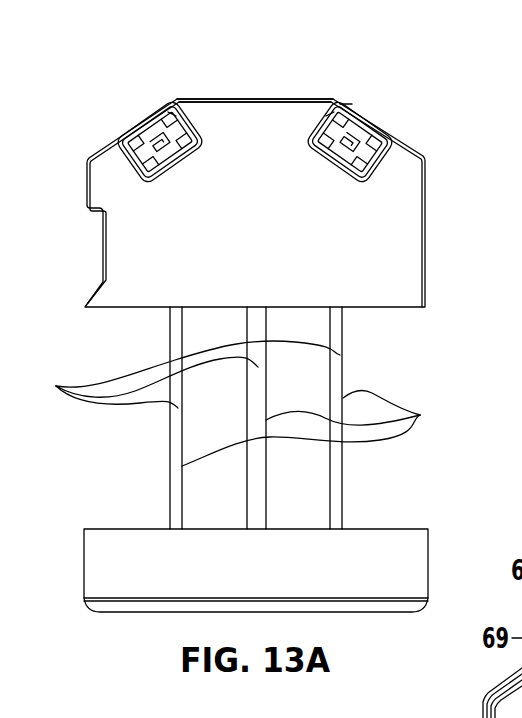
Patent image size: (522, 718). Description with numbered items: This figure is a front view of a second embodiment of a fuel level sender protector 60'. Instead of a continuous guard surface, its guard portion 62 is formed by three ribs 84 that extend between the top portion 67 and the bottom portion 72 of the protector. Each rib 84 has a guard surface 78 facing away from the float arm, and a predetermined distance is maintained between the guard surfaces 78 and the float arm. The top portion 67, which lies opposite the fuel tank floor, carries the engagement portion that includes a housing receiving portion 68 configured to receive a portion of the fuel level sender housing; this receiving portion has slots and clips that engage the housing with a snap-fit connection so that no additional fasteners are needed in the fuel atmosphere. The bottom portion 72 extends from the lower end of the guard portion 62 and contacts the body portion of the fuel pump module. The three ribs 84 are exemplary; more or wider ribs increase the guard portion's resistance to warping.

The fuel level sender protector 60' is at (231, 290).
The top portion 67 is at (262, 100).
The housing receiving portion 68 is at (371, 64).
The guard surface 78 is at (184, 374).
The rib 84 is at (456, 388).
The guard portion 62 is at (263, 403).
The bottom portion 72 is at (112, 601).